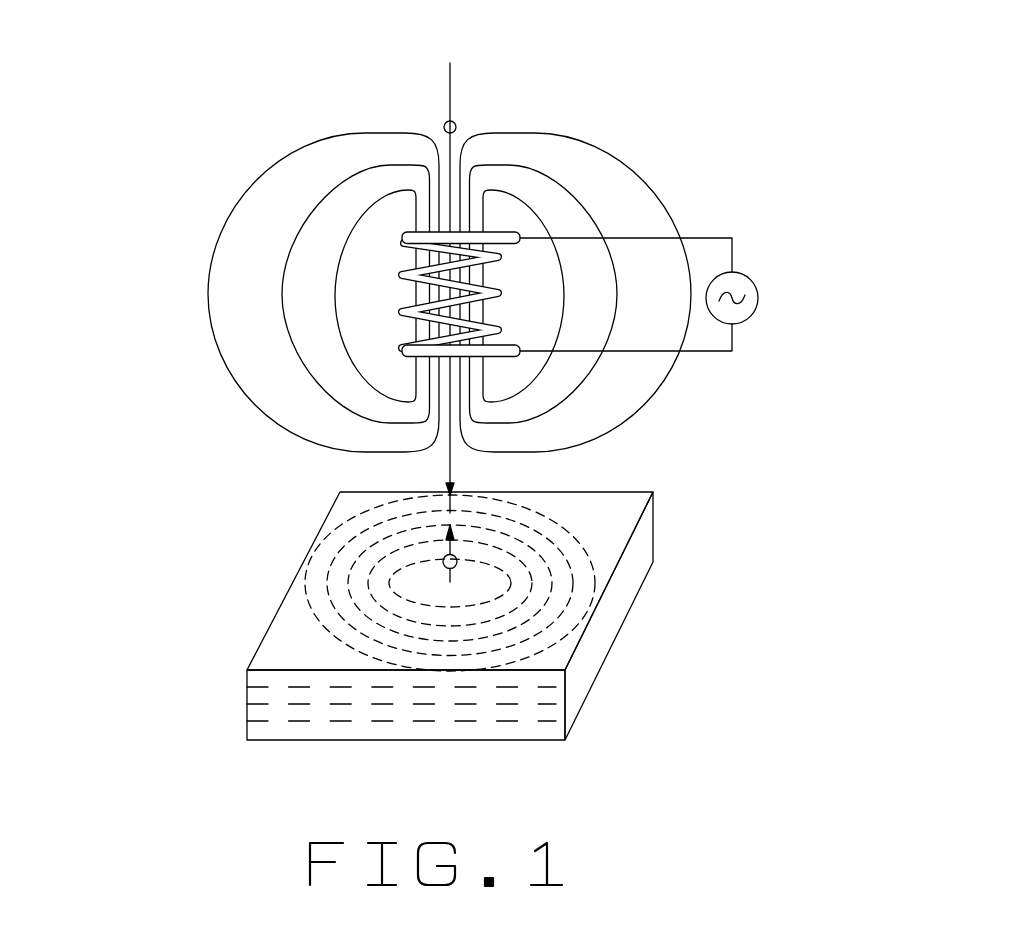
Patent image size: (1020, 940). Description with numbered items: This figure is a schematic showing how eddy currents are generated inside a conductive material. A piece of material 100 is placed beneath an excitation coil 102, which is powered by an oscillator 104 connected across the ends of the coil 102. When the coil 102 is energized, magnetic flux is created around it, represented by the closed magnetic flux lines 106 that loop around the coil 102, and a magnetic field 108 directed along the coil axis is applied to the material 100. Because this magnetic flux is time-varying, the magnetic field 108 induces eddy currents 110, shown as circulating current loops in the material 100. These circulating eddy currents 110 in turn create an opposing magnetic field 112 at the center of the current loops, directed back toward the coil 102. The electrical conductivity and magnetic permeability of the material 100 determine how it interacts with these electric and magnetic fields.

The material 100 is at (618, 637).
The excitation coil 102 is at (506, 222).
The oscillator 104 is at (760, 262).
The magnetic flux lines 106 is at (215, 247).
The magnetic field 108 is at (444, 124).
The eddy currents 110 is at (592, 556).
The opposing magnetic field 112 is at (443, 558).